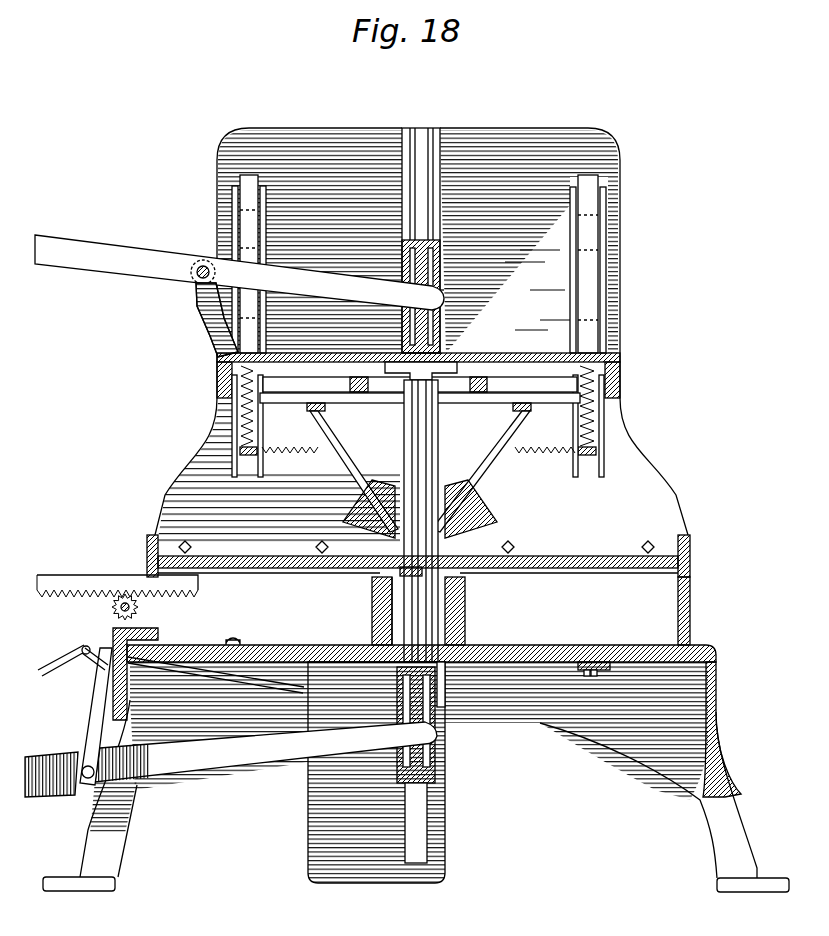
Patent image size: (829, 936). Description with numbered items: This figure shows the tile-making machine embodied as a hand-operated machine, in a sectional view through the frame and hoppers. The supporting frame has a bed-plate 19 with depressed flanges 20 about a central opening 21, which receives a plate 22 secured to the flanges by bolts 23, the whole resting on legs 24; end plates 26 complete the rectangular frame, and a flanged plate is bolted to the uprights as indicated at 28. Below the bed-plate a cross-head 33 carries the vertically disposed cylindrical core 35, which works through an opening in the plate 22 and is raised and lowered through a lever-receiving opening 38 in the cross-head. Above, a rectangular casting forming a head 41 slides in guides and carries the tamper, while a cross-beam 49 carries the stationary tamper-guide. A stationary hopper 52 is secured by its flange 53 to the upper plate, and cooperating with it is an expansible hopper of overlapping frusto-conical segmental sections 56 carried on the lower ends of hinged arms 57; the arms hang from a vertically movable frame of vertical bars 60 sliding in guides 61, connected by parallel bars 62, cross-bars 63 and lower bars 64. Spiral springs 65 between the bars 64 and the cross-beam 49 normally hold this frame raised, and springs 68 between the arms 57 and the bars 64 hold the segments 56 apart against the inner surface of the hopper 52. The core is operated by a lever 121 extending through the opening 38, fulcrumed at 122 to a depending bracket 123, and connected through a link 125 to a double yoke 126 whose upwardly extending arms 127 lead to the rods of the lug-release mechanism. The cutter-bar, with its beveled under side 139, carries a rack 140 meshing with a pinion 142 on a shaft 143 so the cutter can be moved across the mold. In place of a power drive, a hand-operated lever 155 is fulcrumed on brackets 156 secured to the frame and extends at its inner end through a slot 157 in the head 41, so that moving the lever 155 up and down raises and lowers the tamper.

The bed-plate 19 is at (200, 637).
The depressed flanges 20 is at (613, 670).
The central opening 21 is at (240, 636).
The plate 22 is at (353, 655).
The bolts 23 is at (582, 676).
The legs 24 is at (103, 857).
The end plates 26 is at (158, 620).
The bolts 28 is at (322, 543).
The cross-head 33 is at (443, 723).
The core 35 is at (466, 605).
The lever-receiving opening 38 is at (450, 762).
The head casting 41 is at (428, 260).
The cross-beam 49 is at (488, 360).
The stationary hopper 52 is at (477, 513).
The flange 53 is at (450, 570).
The segmental sections 56 is at (400, 485).
The arms 57 is at (336, 462).
The vertical bars 60 is at (252, 193).
The guides 61 is at (236, 231).
The parallel bars 62 is at (378, 405).
The cross-bars 63 is at (428, 394).
The bars 64 is at (235, 470).
The spiral springs 65 is at (220, 427).
The springs 68 is at (290, 455).
The operating lever 121 is at (247, 757).
The fulcrum 122 is at (132, 797).
The depending bracket 123 is at (70, 783).
The link 125 is at (53, 678).
The double yoke 126 is at (88, 654).
The arms 127 is at (108, 700).
The beveled under side 139 is at (372, 562).
The rack 140 is at (73, 578).
The pinion 142 is at (113, 613).
The shaft 143 is at (120, 606).
The hand-operated lever 155 is at (146, 245).
The brackets 156 is at (200, 322).
The slot 157 is at (470, 284).